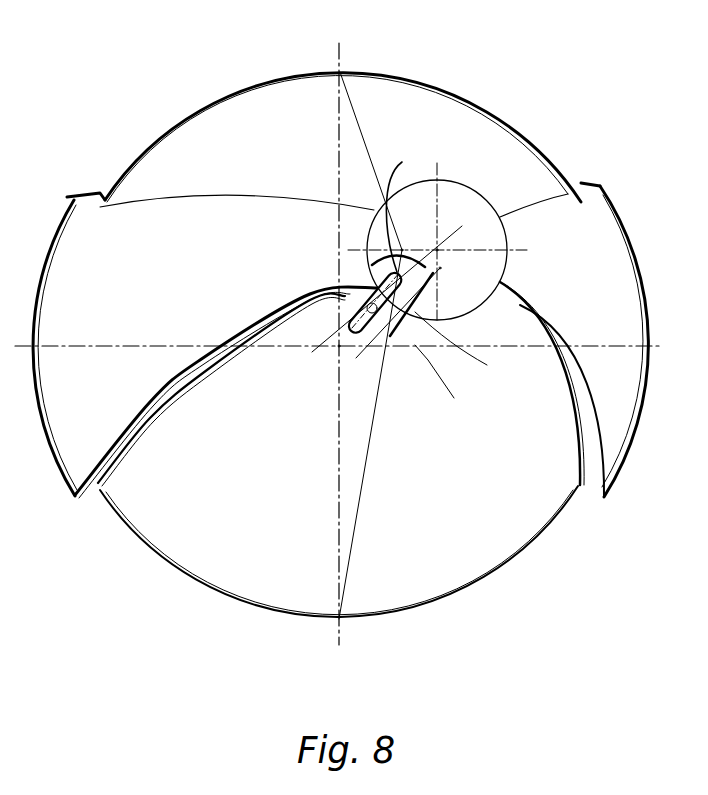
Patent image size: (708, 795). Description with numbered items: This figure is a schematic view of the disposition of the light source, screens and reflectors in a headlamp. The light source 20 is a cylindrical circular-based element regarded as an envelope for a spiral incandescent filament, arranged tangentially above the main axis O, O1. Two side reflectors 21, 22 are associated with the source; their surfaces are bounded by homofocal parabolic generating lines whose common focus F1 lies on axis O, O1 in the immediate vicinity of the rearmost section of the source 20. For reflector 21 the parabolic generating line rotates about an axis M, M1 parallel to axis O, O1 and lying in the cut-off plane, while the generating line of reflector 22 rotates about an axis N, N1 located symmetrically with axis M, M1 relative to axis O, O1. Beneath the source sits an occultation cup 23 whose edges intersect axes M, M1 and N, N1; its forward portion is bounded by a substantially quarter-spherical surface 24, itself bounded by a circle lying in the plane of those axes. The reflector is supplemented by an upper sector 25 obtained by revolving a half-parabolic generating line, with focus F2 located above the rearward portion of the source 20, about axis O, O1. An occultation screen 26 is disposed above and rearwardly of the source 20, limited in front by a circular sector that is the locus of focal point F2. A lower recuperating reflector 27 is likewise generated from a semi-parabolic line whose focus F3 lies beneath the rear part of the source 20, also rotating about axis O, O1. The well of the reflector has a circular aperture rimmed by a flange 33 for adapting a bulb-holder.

The light source 20 is at (340, 291).
The side reflector 21 is at (62, 220).
The side reflector 22 is at (615, 453).
The occultation cup 23 is at (377, 340).
The quarter-spherical surface 24 is at (360, 315).
The upper sector 25 is at (306, 97).
The occultation screen 26 is at (500, 258).
The lower recuperating reflector 27 is at (218, 582).
The flange 33 is at (370, 237).
The common focus F1 is at (464, 350).
The focus of upper sector parabola F2 is at (404, 207).
The focus of lower reflector parabola F3 is at (444, 384).
The axis point M is at (376, 305).
The axis point N is at (395, 322).
The axis point O is at (330, 361).
The axis point M1 is at (417, 241).
The axis point N1 is at (454, 272).
The axis point O1 is at (458, 235).